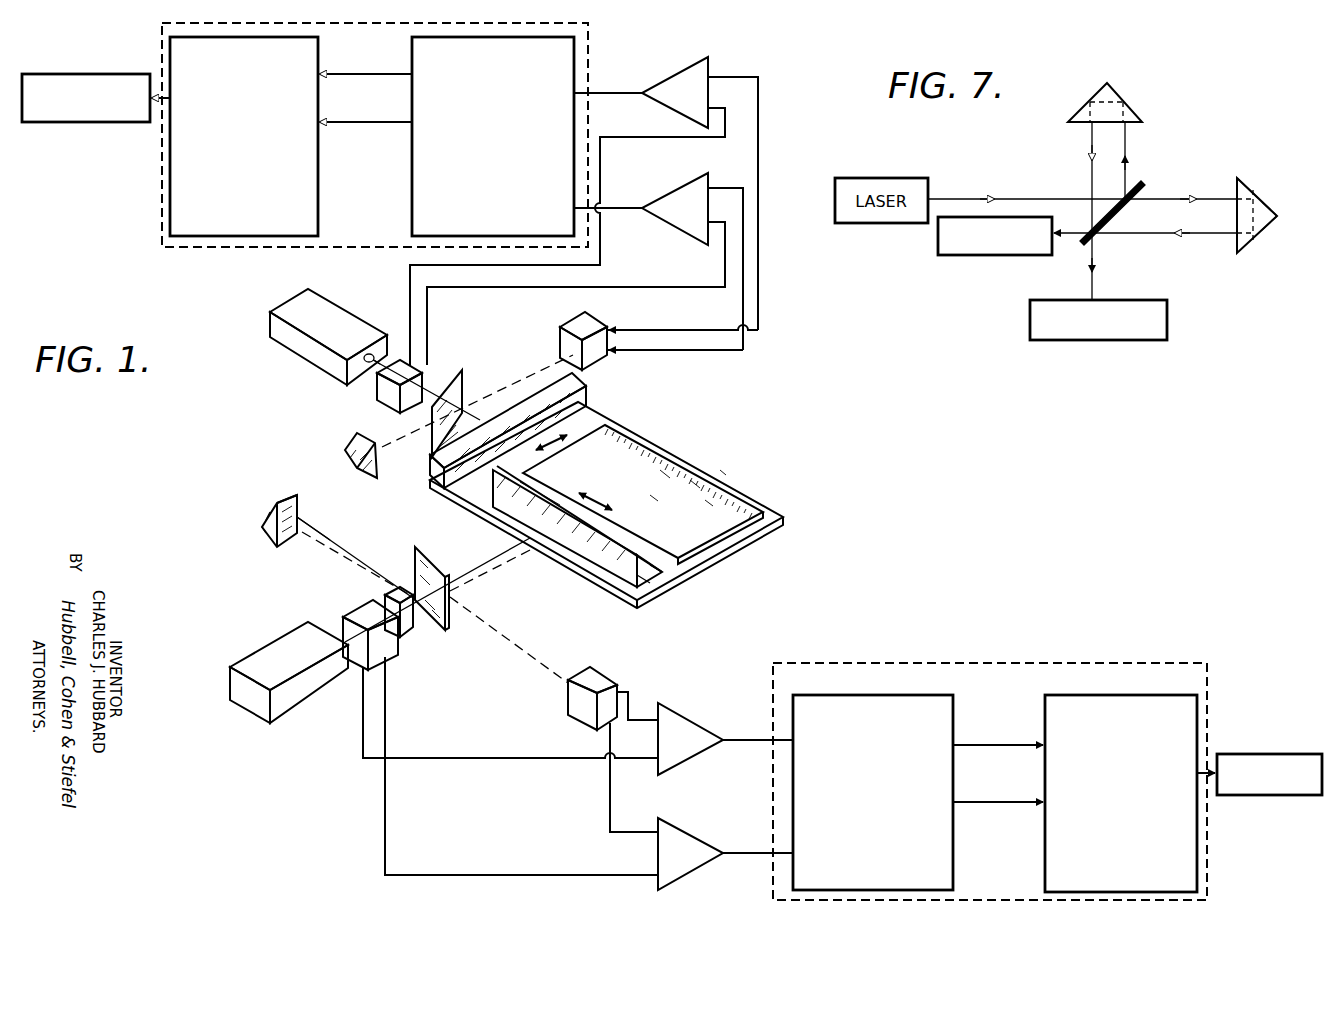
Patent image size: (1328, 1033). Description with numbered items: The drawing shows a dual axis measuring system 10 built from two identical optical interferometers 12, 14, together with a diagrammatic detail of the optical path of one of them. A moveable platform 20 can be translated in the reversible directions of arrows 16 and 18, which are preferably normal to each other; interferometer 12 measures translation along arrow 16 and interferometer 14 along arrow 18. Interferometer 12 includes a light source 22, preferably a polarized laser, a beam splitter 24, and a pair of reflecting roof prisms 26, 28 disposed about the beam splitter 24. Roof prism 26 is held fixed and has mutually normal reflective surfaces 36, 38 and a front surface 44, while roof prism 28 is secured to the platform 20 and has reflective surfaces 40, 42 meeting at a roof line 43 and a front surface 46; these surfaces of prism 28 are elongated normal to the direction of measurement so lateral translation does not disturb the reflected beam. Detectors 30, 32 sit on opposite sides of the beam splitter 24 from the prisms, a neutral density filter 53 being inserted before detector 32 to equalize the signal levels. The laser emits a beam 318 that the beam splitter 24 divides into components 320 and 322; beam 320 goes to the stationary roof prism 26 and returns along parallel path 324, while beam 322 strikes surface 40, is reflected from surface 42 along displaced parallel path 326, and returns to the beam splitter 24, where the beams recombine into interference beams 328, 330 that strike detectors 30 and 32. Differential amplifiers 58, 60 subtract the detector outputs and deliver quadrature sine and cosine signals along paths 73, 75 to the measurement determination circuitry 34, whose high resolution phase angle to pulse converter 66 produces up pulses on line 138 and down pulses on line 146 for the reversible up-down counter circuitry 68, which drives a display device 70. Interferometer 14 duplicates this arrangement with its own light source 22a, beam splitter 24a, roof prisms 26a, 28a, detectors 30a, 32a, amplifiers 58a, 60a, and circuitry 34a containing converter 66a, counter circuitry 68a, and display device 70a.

In FIG. 1, the dual axis measuring system 10 is at (697, 455).
In FIG. 1, the optical interferometer 12 is at (328, 597).
In FIG. 1, the optical interferometer 14 is at (453, 358).
In FIG. 1, the arrow 16 is at (560, 442).
In FIG. 1, the arrow 18 is at (590, 506).
In FIG. 1, the moveable platform 20 is at (748, 545).
In FIG. 1, the light source 22 is at (294, 698).
In FIG. 1, the light source 22a is at (293, 347).
In FIG. 1, the beam splitter 24 is at (438, 562).
In FIG. 7, the beam splitter 24 is at (1124, 204).
In FIG. 1, the beam splitter 24a is at (462, 385).
In FIG. 1, the roof prism 26 is at (287, 543).
In FIG. 7, the roof prism 26 is at (1126, 100).
In FIG. 1, the roof prism 26a is at (365, 478).
In FIG. 1, the roof prism 28 is at (617, 572).
In FIG. 7, the roof prism 28 is at (1256, 246).
In FIG. 1, the roof prism 28a is at (590, 388).
In FIG. 1, the detector 30 is at (606, 672).
In FIG. 7, the detector 30 is at (1120, 342).
In FIG. 1, the detector 30a is at (600, 320).
In FIG. 1, the detector 32 is at (398, 657).
In FIG. 7, the detector 32 is at (1000, 258).
In FIG. 1, the detector 32a is at (375, 408).
In FIG. 1, the electronic measurement determination circuitry 34 is at (1055, 662).
In FIG. 1, the electronic measurement determination circuitry 34a is at (243, 248).
In FIG. 1, the reflective surface 36 is at (270, 510).
In FIG. 1, the reflective surface 38 is at (262, 535).
In FIG. 1, the reflective surface 40 is at (646, 550).
In FIG. 7, the reflective surface 40 is at (1252, 194).
In FIG. 1, the reflective surface 42 is at (671, 575).
In FIG. 7, the reflective surface 42 is at (1263, 236).
In FIG. 1, the roof line 43 is at (688, 578).
In FIG. 7, the roof line 43 is at (1280, 215).
In FIG. 1, the front surface 44 is at (300, 512).
In FIG. 1, the front surface 46 is at (559, 518).
In FIG. 1, the neutral density filter 53 is at (414, 632).
In FIG. 1, the differential amplifier 58 is at (697, 731).
In FIG. 1, the differential amplifier 58a is at (672, 78).
In FIG. 1, the differential amplifier 60 is at (700, 842).
In FIG. 1, the differential amplifier 60a is at (675, 228).
In FIG. 1, the high resolution phase angle to pulse converter 66 is at (948, 697).
In FIG. 1, the high resolution phase angle to pulse converter 66a is at (412, 206).
In FIG. 1, the reversible up-down counter circuitry 68 is at (1150, 680).
In FIG. 1, the reversible up-down counter circuitry 68a is at (318, 197).
In FIG. 1, the display device 70 is at (1295, 754).
In FIG. 1, the display device 70a is at (98, 124).
In FIG. 1, the path 73 is at (760, 742).
In FIG. 1, the path 75 is at (750, 855).
In FIG. 1, the digital signal path 138 is at (1020, 746).
In FIG. 1, the digital signal path 146 is at (1006, 802).
In FIG. 7, the beam 318 is at (968, 196).
In FIG. 7, the beam 320 is at (1128, 172).
In FIG. 7, the beam 322 is at (1193, 197).
In FIG. 7, the path 324 is at (1090, 172).
In FIG. 7, the path 326 is at (1194, 237).
In FIG. 7, the recombined beam 328 is at (1096, 256).
In FIG. 7, the recombined beam 330 is at (1074, 244).